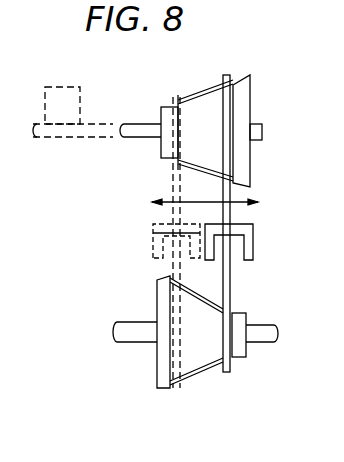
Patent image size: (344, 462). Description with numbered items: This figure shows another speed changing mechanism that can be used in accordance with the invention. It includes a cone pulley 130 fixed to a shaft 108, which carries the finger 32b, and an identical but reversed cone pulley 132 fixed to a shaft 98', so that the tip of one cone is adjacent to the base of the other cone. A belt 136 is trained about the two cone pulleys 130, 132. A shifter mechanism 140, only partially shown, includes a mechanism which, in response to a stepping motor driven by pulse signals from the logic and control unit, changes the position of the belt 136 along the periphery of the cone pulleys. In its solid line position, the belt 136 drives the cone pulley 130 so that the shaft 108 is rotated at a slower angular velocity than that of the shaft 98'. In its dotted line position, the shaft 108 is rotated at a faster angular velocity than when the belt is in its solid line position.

The finger 32b is at (80, 101).
The shaft 108 is at (98, 139).
The cone pulley 130 is at (252, 92).
The cone pulley 132 is at (157, 297).
The belt 136 is at (230, 212).
The shifter mechanism 140 is at (146, 235).
The shaft 98' is at (276, 317).